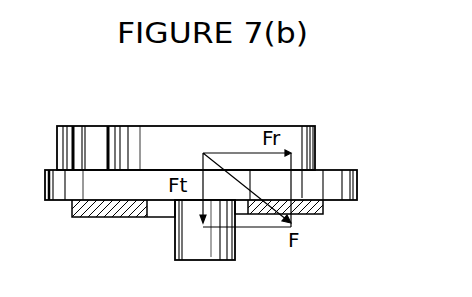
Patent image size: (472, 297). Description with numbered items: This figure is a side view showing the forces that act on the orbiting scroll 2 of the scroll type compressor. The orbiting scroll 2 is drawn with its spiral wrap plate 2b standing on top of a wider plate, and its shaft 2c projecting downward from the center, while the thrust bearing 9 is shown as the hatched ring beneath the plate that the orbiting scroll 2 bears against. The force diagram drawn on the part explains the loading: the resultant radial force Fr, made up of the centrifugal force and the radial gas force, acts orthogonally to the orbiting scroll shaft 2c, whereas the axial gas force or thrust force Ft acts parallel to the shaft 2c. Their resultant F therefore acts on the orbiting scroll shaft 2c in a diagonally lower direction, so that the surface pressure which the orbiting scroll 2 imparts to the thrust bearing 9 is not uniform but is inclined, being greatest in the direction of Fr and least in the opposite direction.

The orbiting scroll 2 is at (215, 143).
The wrap plate of orbiting scroll 2b is at (66, 133).
The shaft of orbiting scroll 2c is at (184, 236).
The thrust bearing 9 is at (322, 206).